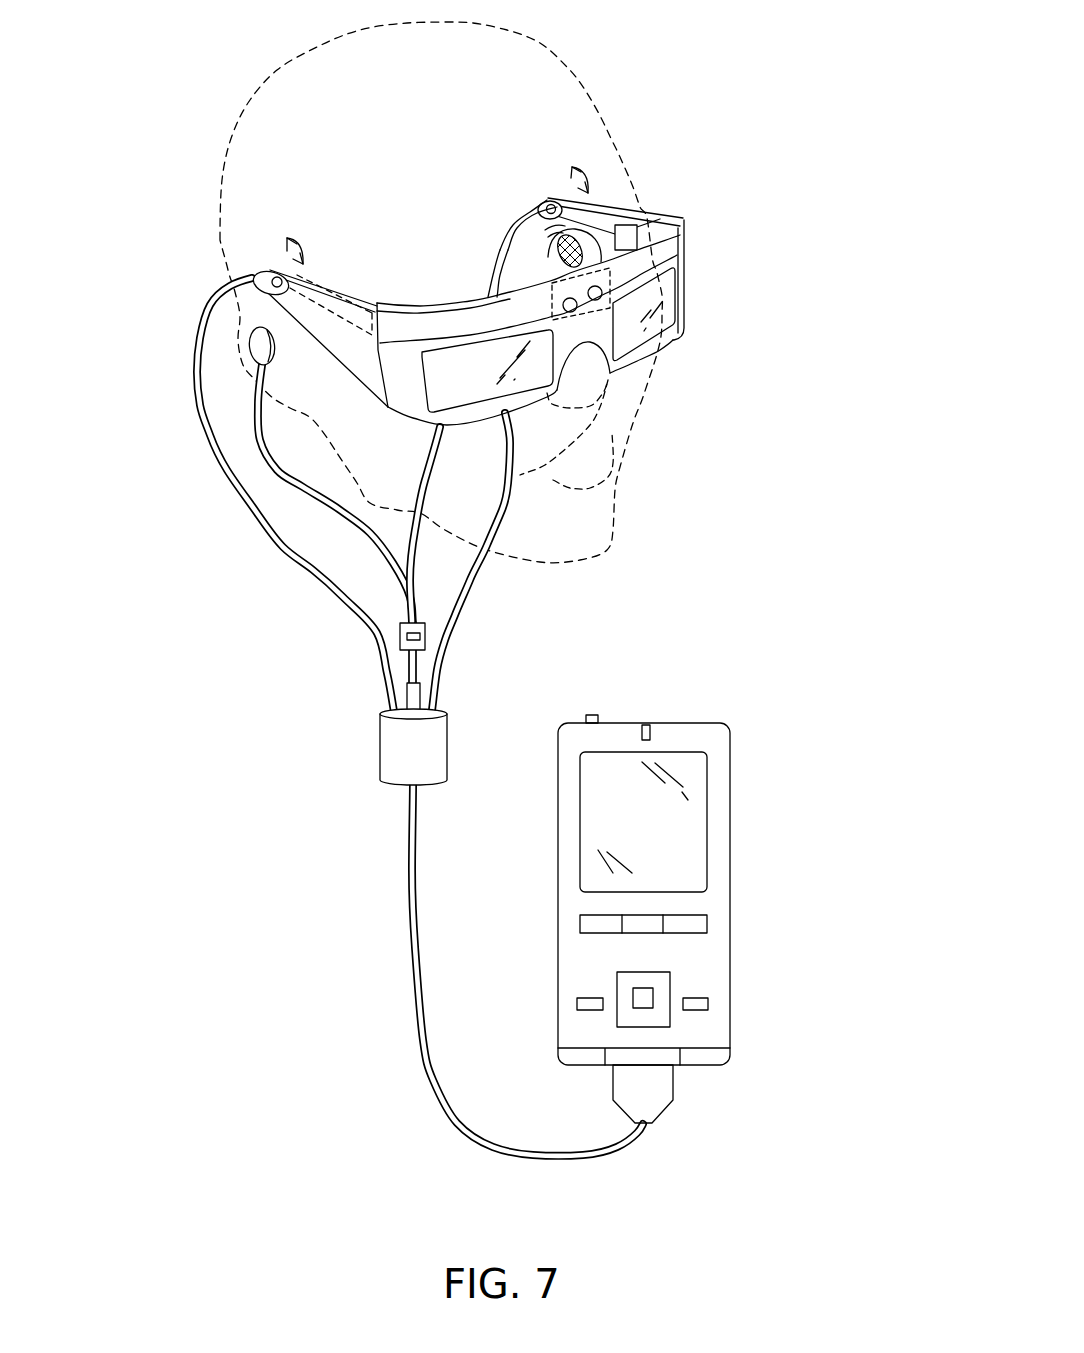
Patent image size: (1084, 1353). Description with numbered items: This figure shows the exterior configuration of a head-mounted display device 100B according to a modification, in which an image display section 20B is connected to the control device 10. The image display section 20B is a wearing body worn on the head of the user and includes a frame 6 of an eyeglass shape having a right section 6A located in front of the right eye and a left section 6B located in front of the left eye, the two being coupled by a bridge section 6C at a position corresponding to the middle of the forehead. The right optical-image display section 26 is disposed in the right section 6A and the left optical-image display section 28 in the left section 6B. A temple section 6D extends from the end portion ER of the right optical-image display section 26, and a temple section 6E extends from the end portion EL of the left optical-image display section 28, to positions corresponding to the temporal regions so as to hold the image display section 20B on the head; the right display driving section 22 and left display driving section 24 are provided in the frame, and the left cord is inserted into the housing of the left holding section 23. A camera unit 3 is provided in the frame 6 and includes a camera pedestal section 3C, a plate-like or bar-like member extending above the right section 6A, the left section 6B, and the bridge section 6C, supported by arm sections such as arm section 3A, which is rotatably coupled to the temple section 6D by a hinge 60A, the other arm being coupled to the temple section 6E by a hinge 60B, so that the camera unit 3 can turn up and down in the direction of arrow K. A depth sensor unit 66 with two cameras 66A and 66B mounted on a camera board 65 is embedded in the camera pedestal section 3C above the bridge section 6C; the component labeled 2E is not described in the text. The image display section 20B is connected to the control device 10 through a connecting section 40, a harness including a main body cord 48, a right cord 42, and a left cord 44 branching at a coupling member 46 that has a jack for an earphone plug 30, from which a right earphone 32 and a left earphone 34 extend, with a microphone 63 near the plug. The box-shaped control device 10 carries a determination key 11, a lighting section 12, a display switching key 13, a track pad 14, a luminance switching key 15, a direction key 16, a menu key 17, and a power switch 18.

The head-mounted display device 100B is at (632, 110).
The frame 6 is at (516, 296).
The camera unit 3 is at (397, 300).
The arm section 3A is at (313, 277).
The camera pedestal section 3C is at (458, 330).
The image display section 20B is at (712, 190).
The right display driving section 22 is at (357, 297).
The left holding section 23 is at (606, 210).
The left display driving section 24 is at (657, 227).
The right optical-image display section 26 is at (470, 400).
The left optical-image display section 28 is at (673, 322).
The earphone 2E is at (557, 232).
The right section 6A is at (522, 413).
The left section 6B is at (668, 358).
The bridge section 6C is at (582, 363).
The temple section 6D is at (323, 353).
The temple section 6E is at (638, 232).
The right earphone 32 is at (262, 347).
The left earphone 34 is at (560, 235).
The hinge 60A is at (273, 271).
The hinge 60B is at (553, 200).
The camera board 65 is at (687, 265).
The depth sensor unit 66 is at (478, 226).
The camera 66A is at (500, 312).
The camera 66B is at (513, 217).
The end portion EL is at (687, 312).
The end portion ER is at (392, 413).
The arrow K is at (446, 209).
The connecting section 40 is at (467, 707).
The right cord 42 is at (282, 548).
The left cord 44 is at (473, 578).
The coupling member 46 is at (437, 743).
The main body cord 48 is at (417, 952).
The microphone 63 is at (407, 645).
The earphone plug 30 is at (415, 695).
The control device 10 is at (644, 860).
The determination key 11 is at (647, 998).
The lighting section 12 is at (646, 724).
The display switching key 13 is at (702, 1003).
The track pad 14 is at (598, 807).
The luminance switching key 15 is at (578, 1007).
The direction key 16 is at (625, 987).
The menu key 17 is at (582, 925).
The power switch 18 is at (593, 715).